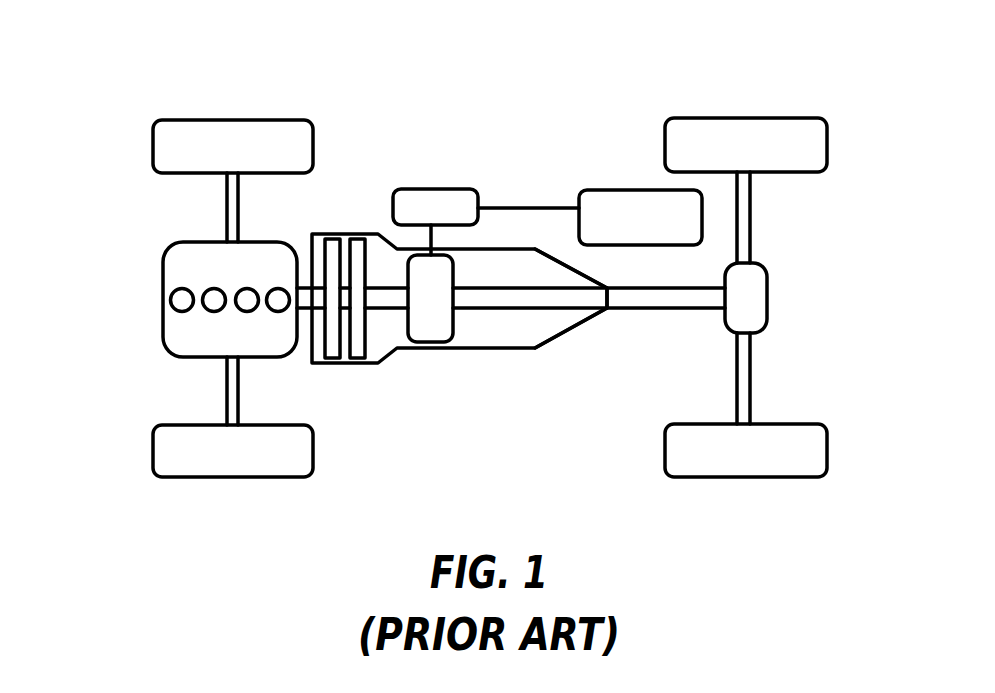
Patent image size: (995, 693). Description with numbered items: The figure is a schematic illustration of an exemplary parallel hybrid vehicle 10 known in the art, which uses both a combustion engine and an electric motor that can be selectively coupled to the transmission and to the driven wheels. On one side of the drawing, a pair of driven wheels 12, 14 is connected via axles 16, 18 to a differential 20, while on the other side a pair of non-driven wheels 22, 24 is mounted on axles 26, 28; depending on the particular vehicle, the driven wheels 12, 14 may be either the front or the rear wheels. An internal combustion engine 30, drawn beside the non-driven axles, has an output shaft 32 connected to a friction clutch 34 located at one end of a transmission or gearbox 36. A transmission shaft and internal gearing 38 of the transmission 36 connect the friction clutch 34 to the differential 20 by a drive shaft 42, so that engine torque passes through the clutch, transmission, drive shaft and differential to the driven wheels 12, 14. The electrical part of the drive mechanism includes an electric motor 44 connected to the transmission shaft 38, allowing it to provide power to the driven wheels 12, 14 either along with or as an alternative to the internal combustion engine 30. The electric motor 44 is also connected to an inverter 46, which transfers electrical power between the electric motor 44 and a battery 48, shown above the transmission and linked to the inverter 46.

The parallel hybrid vehicle 10 is at (107, 92).
The driven wheel 12 is at (728, 117).
The driven wheel 14 is at (664, 456).
The axle 16 is at (751, 222).
The axle 18 is at (751, 382).
The differential 20 is at (768, 300).
The non-driven wheel 22 is at (190, 118).
The non-driven wheel 24 is at (152, 450).
The axle 26 is at (226, 220).
The axle 28 is at (226, 394).
The internal combustion engine 30 is at (162, 299).
The output shaft 32 is at (448, 306).
The friction clutch 34 is at (357, 364).
The transmission 36 is at (577, 328).
The transmission shaft and internal gearing 38 is at (500, 309).
The drive shaft 42 is at (652, 309).
The electric motor 44 is at (435, 343).
The inverter 46 is at (435, 188).
The battery 48 is at (632, 189).